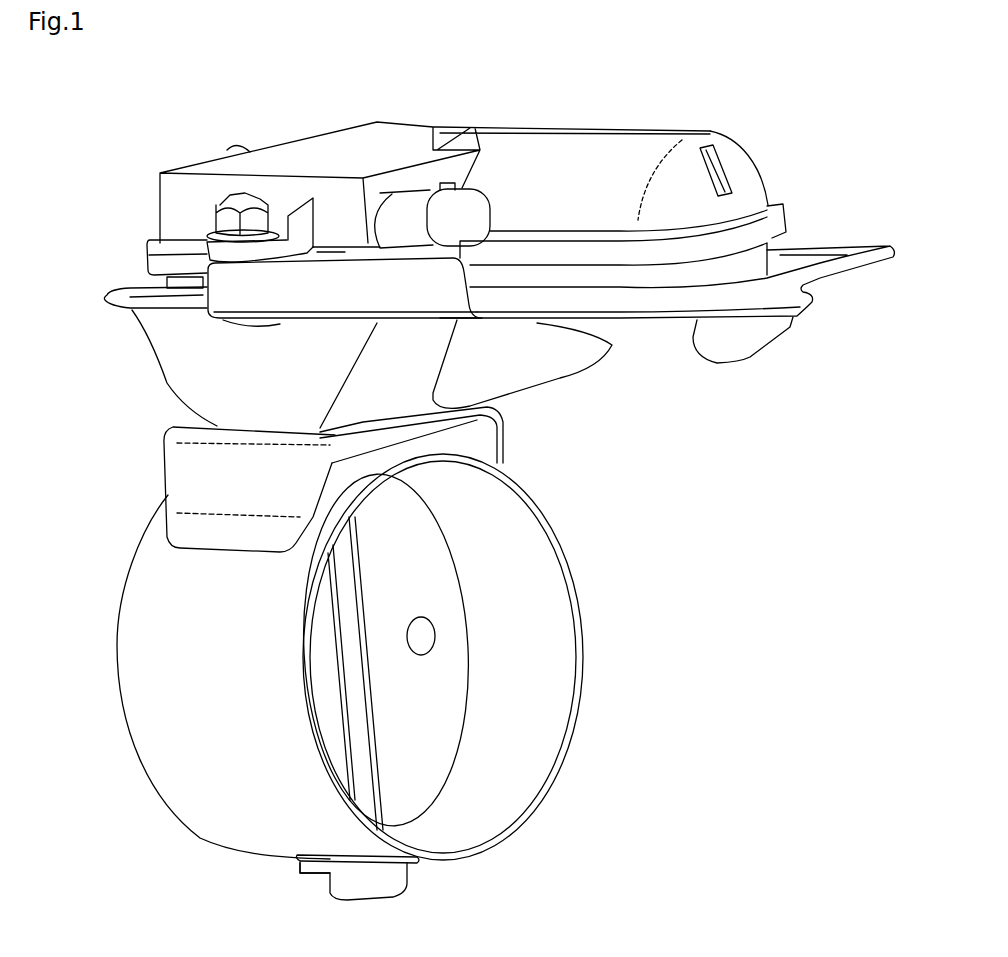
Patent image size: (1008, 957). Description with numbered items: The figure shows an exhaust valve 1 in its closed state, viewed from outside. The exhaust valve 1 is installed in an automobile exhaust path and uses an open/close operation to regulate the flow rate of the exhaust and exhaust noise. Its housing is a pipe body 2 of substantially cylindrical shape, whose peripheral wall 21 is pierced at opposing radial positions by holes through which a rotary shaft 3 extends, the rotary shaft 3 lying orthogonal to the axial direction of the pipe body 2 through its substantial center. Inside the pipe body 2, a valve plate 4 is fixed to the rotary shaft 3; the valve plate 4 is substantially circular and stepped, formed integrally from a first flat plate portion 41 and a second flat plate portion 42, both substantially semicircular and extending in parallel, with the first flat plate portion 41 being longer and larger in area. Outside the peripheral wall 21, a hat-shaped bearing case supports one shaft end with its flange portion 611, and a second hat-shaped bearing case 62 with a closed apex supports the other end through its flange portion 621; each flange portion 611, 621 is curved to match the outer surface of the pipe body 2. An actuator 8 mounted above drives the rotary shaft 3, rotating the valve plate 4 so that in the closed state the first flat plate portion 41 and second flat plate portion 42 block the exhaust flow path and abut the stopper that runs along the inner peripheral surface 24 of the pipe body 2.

The exhaust valve 1 is at (368, 676).
The pipe body 2 is at (360, 676).
The peripheral wall 21 is at (513, 847).
The inner peripheral surface 24 is at (507, 510).
The rotary shaft 3 is at (367, 787).
The valve plate 4 is at (360, 650).
The first flat plate portion 41 is at (433, 700).
The second flat plate portion 42 is at (326, 685).
The actuator 8 is at (607, 132).
The bearing case 62 is at (377, 902).
The flange portion 611 is at (392, 450).
The flange portion 621 is at (300, 863).